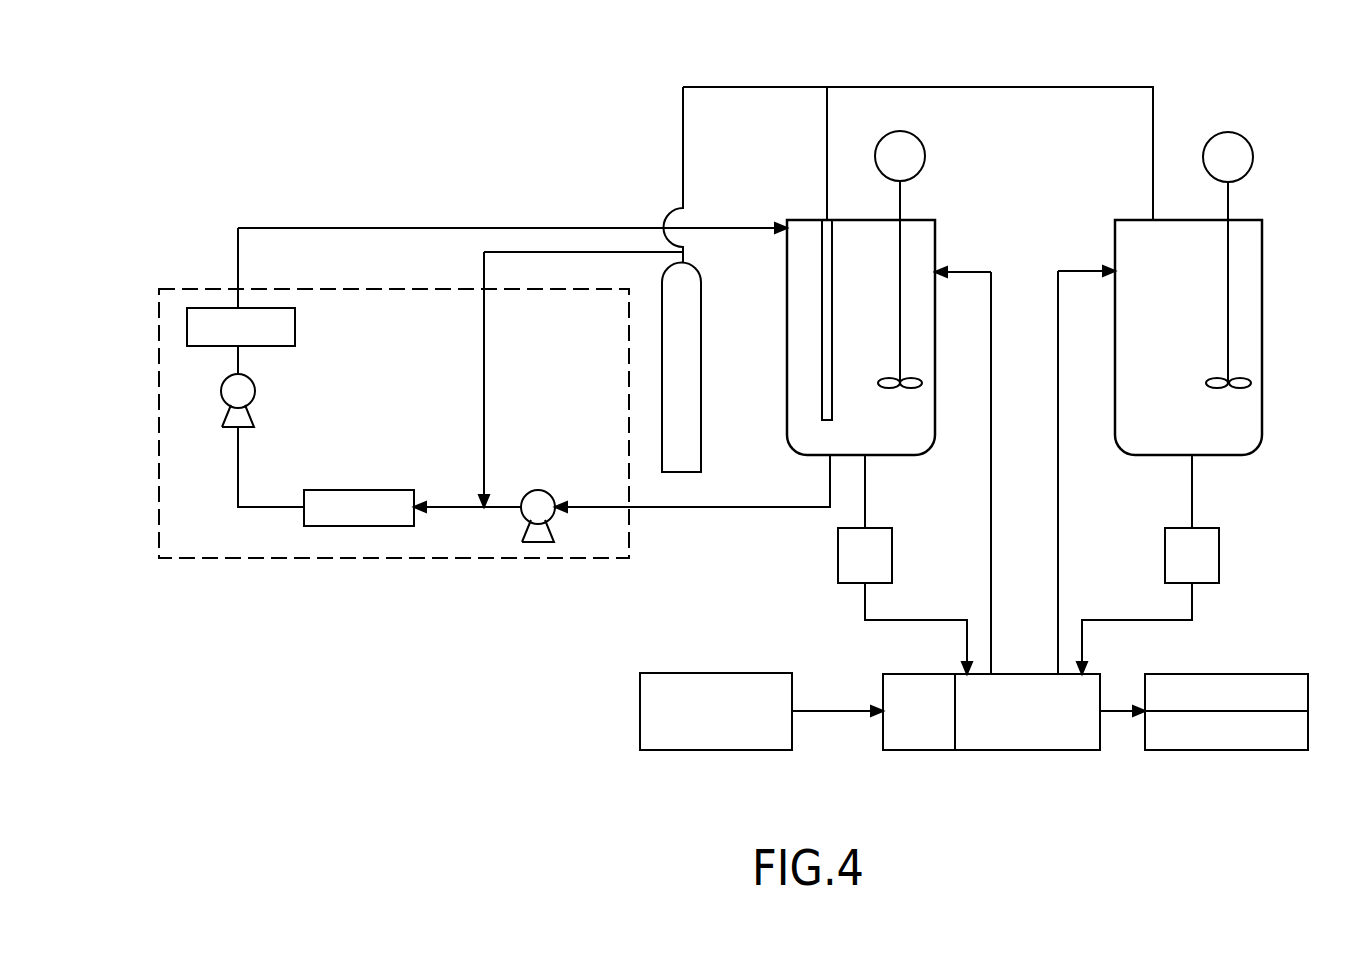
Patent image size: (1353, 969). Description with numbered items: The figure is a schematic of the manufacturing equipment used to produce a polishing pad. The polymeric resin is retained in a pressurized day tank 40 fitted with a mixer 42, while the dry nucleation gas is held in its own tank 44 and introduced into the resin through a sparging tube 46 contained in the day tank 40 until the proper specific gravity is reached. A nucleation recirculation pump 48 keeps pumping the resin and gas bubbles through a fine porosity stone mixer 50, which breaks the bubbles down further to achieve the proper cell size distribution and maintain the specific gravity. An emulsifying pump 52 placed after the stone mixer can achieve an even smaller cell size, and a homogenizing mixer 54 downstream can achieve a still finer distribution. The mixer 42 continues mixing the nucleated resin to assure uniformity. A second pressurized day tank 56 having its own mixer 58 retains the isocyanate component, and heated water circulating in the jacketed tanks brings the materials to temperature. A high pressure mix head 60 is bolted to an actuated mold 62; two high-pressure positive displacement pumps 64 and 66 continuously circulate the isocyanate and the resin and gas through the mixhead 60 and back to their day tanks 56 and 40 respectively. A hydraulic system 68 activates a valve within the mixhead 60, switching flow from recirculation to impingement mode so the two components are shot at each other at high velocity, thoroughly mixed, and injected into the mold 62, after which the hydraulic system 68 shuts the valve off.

The pressurized day tank 40 is at (917, 457).
The mixer 42 is at (926, 148).
The tank 44 is at (701, 355).
The sparging tube 46 is at (822, 252).
The nucleation recirculation pump 48 is at (540, 490).
The fine porosity stone mixer 50 is at (347, 522).
The emulsifying pump 52 is at (255, 388).
The homogenizing mixer 54 is at (229, 340).
The second pressurized day tank 56 is at (1232, 458).
The mixer 58 is at (1253, 165).
The high pressure mix head 60 is at (986, 726).
The actuated mold 62 is at (1242, 733).
The high-pressure positive displacement pump 64 is at (1180, 569).
The high-pressure positive displacement pump 66 is at (853, 569).
The hydraulic system 68 is at (704, 726).